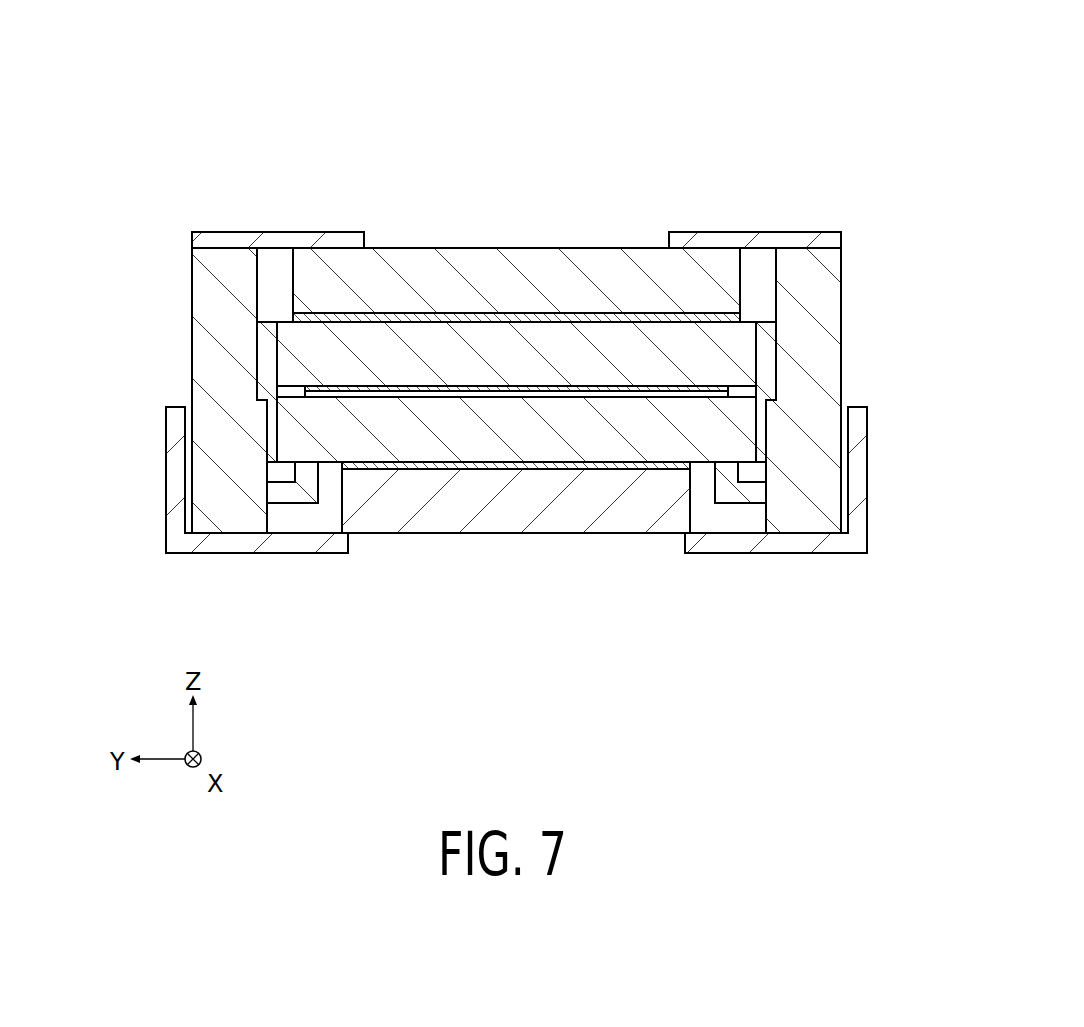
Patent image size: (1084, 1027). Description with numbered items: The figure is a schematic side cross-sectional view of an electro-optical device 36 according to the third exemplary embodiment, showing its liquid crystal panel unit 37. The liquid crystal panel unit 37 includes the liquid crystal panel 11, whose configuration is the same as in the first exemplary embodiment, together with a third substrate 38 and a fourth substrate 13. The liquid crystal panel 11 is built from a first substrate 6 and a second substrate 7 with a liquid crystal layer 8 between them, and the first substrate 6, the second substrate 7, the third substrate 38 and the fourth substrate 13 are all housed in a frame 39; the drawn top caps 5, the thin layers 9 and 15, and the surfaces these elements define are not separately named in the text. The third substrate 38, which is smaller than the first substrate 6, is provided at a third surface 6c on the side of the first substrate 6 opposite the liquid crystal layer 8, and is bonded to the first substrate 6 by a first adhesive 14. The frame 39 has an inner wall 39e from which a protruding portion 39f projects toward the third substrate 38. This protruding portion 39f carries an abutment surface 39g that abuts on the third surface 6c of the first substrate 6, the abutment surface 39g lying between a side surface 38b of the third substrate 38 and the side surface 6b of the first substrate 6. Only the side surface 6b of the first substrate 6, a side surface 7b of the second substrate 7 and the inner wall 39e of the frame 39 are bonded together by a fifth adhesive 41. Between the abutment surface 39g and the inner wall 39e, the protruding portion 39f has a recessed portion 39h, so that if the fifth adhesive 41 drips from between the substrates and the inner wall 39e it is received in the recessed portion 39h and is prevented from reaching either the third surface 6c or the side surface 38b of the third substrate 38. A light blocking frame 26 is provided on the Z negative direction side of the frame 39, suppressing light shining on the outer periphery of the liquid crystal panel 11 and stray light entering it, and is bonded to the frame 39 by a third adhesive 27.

The electro-optical device 36 is at (839, 67).
The liquid crystal panel unit 37 is at (602, 122).
The terminal electrode 5 is at (318, 243).
The first substrate 6 is at (323, 410).
The side surface of first substrate 6b is at (277, 430).
The third surface 6c is at (612, 463).
The second substrate 7 is at (300, 345).
The side surface of second substrate 7b is at (277, 330).
The liquid crystal layer 8 is at (330, 384).
The electrode layer 9 is at (300, 392).
The liquid crystal panel 11 is at (100, 318).
The fourth substrate 13 is at (506, 268).
The first adhesive 14 is at (552, 469).
The upper electrode layer 15 is at (742, 317).
The light blocking frame 26 is at (198, 548).
The third adhesive 27 is at (188, 527).
The third substrate 38 is at (505, 505).
The side surface of third substrate 38b is at (334, 500).
The frame 39 is at (226, 267).
The inner wall 39e is at (271, 270).
The protruding portion 39f is at (300, 505).
The abutment surface 39g is at (280, 471).
The recessed portion 39h is at (300, 492).
The fifth adhesive 41 is at (263, 318).